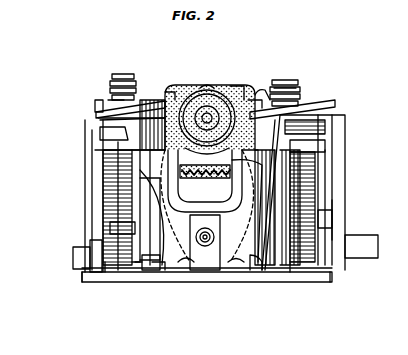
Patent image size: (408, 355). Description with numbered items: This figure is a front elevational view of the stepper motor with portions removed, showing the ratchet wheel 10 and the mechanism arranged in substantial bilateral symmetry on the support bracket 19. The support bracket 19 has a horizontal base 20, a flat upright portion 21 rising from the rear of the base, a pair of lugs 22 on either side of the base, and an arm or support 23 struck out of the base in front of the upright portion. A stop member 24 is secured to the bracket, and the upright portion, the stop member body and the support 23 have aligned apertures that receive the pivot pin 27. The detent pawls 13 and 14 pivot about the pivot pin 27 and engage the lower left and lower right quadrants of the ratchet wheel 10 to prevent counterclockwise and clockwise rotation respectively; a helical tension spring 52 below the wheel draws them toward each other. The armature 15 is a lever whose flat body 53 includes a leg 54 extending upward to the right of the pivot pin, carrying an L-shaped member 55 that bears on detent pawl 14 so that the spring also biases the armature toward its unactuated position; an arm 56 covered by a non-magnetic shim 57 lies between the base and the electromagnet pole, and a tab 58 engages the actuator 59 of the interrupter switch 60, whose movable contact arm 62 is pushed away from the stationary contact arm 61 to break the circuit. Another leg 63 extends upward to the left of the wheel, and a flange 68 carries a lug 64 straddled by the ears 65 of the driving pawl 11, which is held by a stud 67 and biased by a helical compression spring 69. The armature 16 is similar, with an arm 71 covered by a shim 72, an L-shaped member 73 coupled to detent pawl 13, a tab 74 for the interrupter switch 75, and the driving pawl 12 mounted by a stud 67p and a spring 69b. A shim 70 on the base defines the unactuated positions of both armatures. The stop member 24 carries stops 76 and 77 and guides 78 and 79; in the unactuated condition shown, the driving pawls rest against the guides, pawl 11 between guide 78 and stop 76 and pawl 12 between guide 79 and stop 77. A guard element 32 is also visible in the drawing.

The ratchet wheel 10 is at (207, 118).
The driving pawl 11 is at (150, 100).
The driving pawl 12 is at (272, 98).
The detent pawl 13 is at (160, 268).
The detent pawl 14 is at (242, 266).
The armature 15 is at (140, 190).
The armature 16 is at (316, 176).
The support bracket 19 is at (334, 228).
The horizontal base 20 is at (332, 280).
The flat upright portion 21 is at (328, 207).
The lugs 22 is at (105, 274).
The arm or support 23 is at (190, 268).
The stop member 24 is at (208, 86).
The pivot pin 27 is at (216, 266).
The guard 32 is at (232, 92).
The helical tension spring 52 is at (136, 208).
The flat body 53 is at (128, 228).
The leg 54 is at (322, 192).
The L-shaped member 55 is at (305, 122).
The arm 56 is at (140, 270).
The non-magnetic shim 57 is at (148, 268).
The tab 58 is at (302, 132).
The actuator 59 is at (318, 148).
The interrupter switch 60 is at (325, 162).
The stationary contact arm 61 is at (330, 236).
The movable contact arm 62 is at (332, 222).
The leg 63 is at (112, 133).
The lug 64 is at (98, 104).
The ears 65 is at (100, 109).
The stud 67 is at (121, 74).
The stud 67p is at (298, 82).
The flange 68 is at (98, 118).
The helical compression spring 69 is at (112, 98).
The spring 69b is at (300, 93).
The shim 70 is at (178, 268).
The arm 71 is at (262, 268).
The non-magnetic shim 72 is at (250, 264).
The L-shaped member 73 is at (175, 158).
The tab 74 is at (130, 153).
The interrupter switch 75 is at (88, 147).
The stop 76 is at (182, 86).
The stop 77 is at (248, 92).
The guide 78 is at (162, 98).
The guide 79 is at (250, 97).